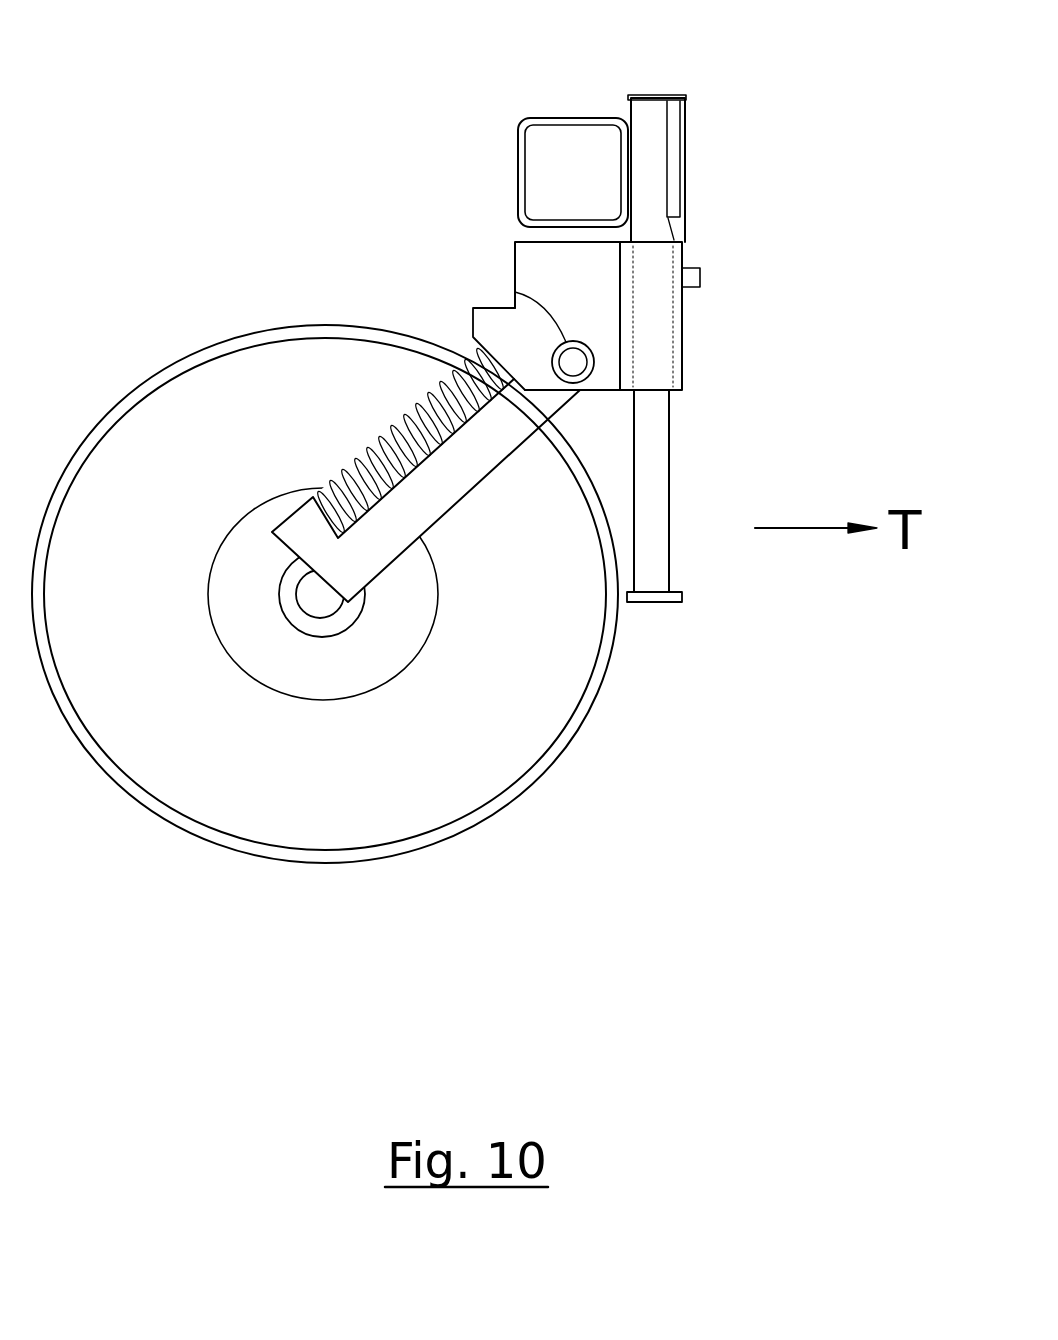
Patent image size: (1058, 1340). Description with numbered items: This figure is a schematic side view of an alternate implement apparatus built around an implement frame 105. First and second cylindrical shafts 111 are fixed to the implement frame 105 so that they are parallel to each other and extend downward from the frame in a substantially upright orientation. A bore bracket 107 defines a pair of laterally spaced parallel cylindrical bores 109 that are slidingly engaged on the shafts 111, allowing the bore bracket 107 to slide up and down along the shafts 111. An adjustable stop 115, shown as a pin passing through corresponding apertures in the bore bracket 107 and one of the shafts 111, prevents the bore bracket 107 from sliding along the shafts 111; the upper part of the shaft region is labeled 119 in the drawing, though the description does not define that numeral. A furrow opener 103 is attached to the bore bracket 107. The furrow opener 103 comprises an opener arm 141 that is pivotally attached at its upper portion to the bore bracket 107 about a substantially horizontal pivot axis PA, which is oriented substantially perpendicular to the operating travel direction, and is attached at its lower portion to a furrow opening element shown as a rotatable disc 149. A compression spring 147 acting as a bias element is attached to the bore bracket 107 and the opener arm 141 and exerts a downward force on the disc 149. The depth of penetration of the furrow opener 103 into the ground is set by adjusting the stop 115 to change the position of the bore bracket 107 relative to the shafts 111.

The furrow opener 103 is at (318, 284).
The implement frame 105 is at (548, 118).
The bore bracket 107 is at (683, 322).
The cylindrical bores 109 is at (685, 200).
The cylindrical shafts 111 is at (670, 468).
The adjustable stop 115 is at (700, 272).
The post cap 119 is at (668, 95).
The opener arm 141 is at (455, 505).
The compression spring 147 is at (340, 478).
The rotatable disc 149 is at (592, 706).
The pivot axis PA is at (513, 292).